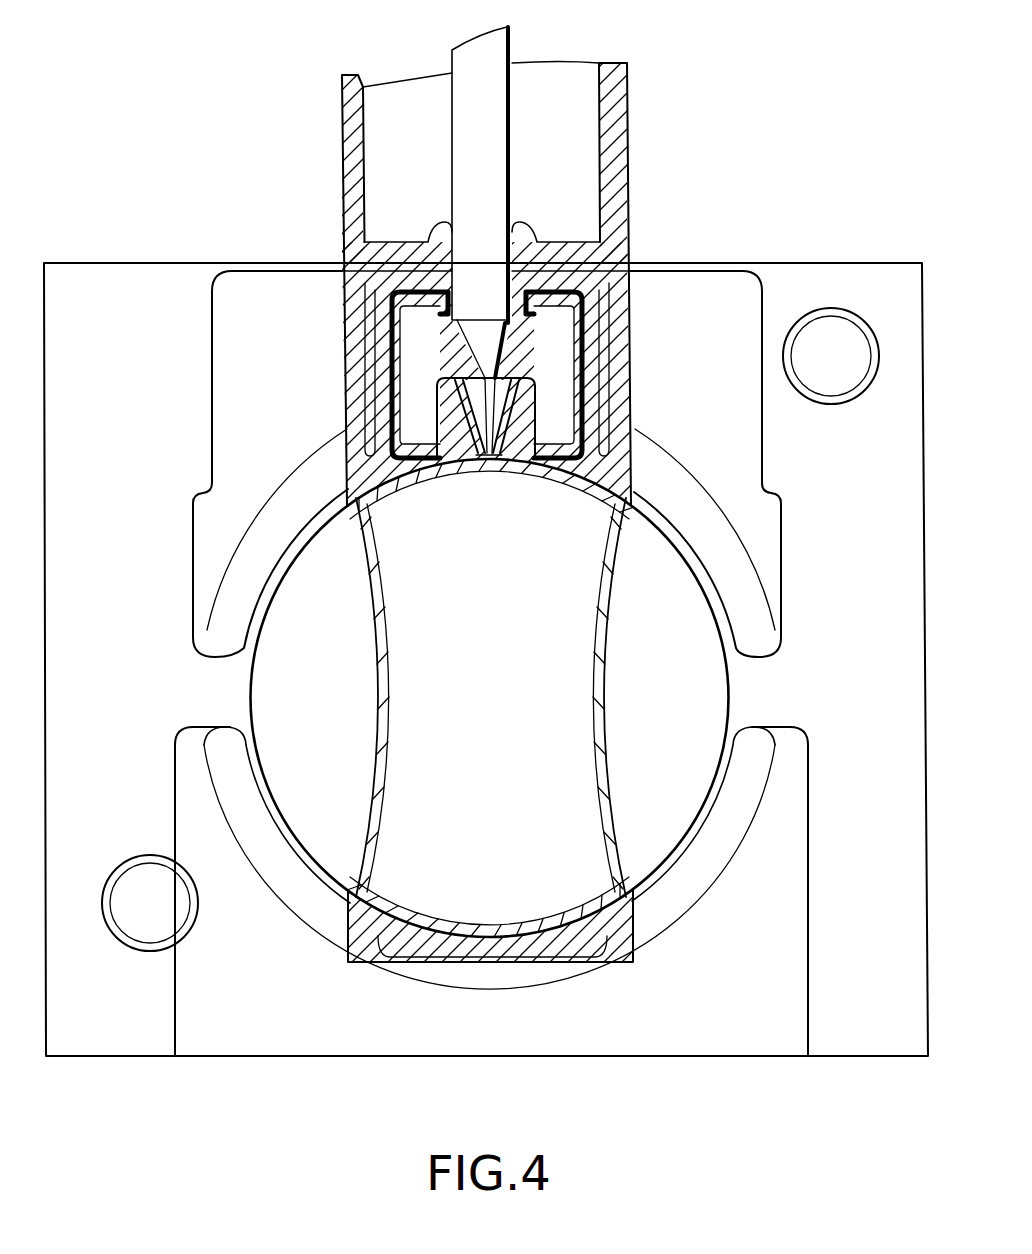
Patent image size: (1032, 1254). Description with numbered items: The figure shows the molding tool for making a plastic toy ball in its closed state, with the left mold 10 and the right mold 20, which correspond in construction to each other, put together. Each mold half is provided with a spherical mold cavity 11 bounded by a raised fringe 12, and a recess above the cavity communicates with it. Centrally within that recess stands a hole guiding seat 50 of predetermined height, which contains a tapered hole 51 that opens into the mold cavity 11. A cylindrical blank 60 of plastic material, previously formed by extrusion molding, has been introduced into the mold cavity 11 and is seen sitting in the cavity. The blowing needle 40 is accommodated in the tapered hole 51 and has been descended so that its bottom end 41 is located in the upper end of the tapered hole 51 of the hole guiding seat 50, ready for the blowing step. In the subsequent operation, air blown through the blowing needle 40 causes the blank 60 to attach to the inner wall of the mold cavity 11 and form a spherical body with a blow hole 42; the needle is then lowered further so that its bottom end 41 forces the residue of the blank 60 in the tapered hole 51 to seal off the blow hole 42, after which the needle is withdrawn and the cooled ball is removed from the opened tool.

The left mold 10 is at (160, 262).
The right mold 20 is at (160, 250).
The spherical mold cavity 11 is at (716, 708).
The raised fringe 12 is at (692, 553).
The blowing needle 40 is at (487, 113).
The bottom end 41 is at (485, 407).
The blow hole 42 is at (487, 465).
The hole guiding seat 50 is at (600, 392).
The tapered hole 51 is at (634, 332).
The cylindrical blank 60 is at (612, 173).